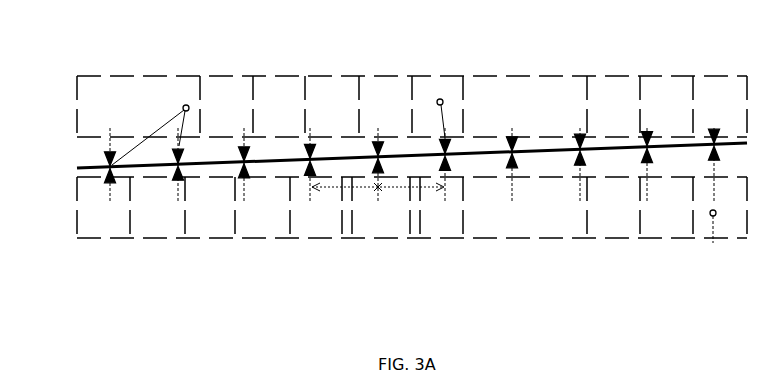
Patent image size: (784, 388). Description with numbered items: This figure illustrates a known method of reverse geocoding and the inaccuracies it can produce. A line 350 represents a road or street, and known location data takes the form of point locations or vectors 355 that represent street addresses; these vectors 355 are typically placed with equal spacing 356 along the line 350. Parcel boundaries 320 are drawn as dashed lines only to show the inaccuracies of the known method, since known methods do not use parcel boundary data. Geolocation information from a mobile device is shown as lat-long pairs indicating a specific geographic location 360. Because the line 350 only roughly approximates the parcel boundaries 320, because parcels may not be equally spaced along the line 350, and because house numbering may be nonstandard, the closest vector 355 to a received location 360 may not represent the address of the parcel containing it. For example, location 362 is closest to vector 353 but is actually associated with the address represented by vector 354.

The parcel boundaries 320 is at (420, 137).
The line representing a road 350 is at (75, 168).
The vector 353 is at (181, 149).
The vector 354 is at (110, 140).
The point location or vector 355 is at (513, 130).
The equal spacing 356 is at (398, 191).
The geographic location 360 is at (441, 99).
The location 362 is at (186, 105).